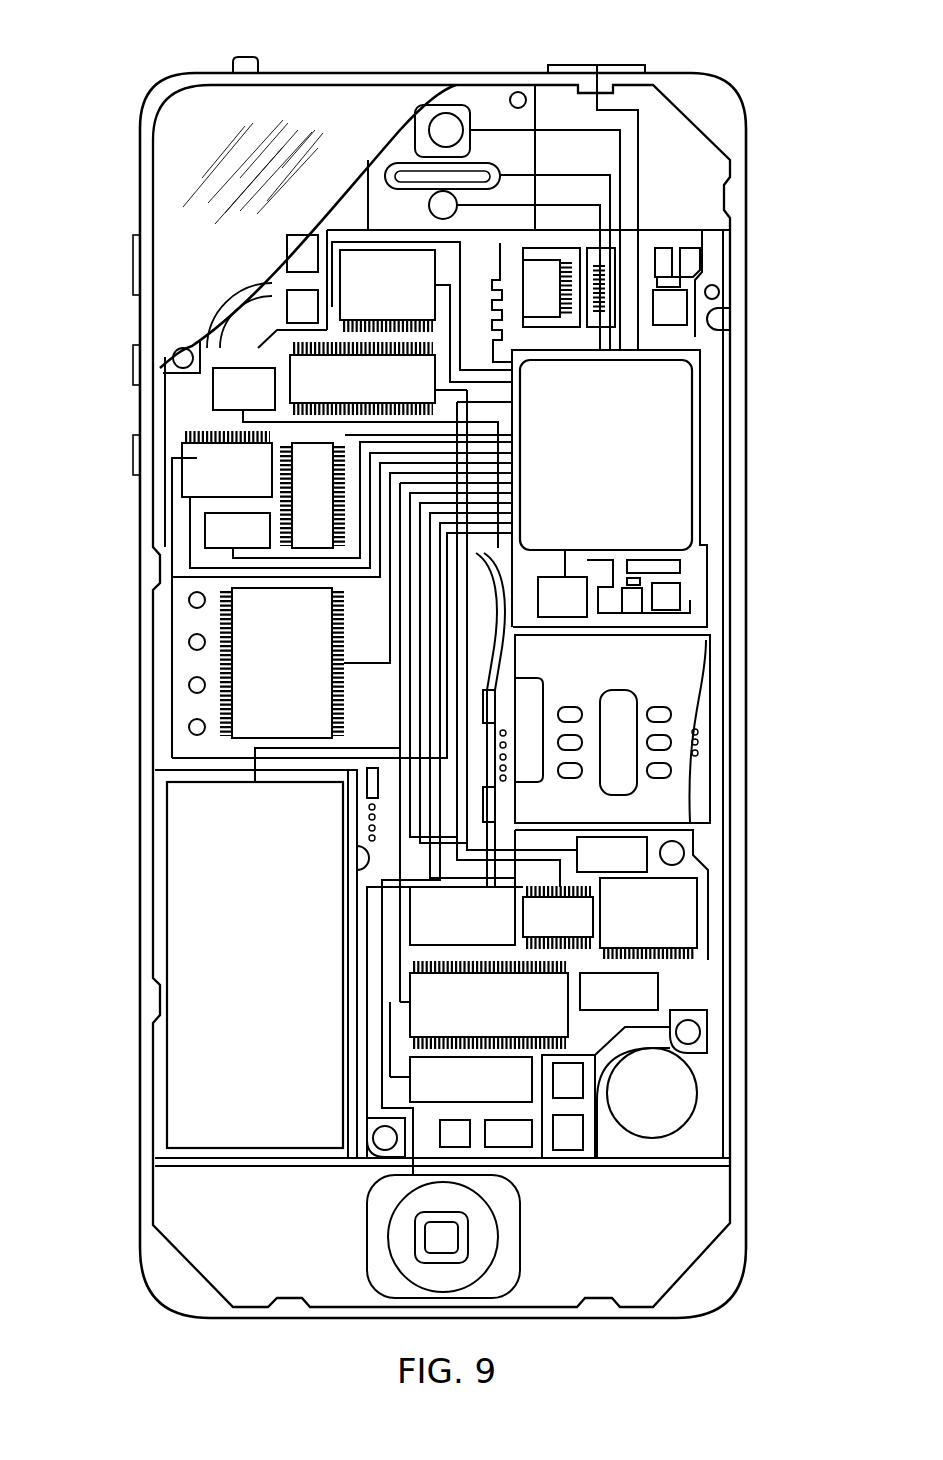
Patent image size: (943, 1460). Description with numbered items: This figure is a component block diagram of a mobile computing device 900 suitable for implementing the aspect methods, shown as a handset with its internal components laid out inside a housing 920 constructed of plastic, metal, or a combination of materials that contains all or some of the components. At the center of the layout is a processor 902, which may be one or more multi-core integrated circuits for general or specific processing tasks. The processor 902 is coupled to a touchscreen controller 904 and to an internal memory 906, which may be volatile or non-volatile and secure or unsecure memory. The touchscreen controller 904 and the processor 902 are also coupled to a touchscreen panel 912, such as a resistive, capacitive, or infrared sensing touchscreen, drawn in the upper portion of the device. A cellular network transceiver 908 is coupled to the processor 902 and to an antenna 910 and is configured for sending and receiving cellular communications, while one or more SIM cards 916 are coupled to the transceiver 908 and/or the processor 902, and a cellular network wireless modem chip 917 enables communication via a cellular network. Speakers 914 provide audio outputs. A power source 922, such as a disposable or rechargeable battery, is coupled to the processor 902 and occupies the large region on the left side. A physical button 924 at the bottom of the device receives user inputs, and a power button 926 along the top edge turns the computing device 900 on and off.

The computing device 900 is at (86, 60).
The processor 902 is at (609, 488).
The touchscreen controller 904 is at (387, 288).
The internal memory 906 is at (350, 605).
The cellular network transceiver 908 is at (631, 263).
The antenna 910 is at (678, 302).
The touchscreen panel 912 is at (188, 176).
The speakers 914 is at (390, 163).
The SIM cards 916 is at (612, 854).
The cellular network wireless modem chip 917 is at (479, 758).
The housing 920 is at (745, 1184).
The power source 922 is at (255, 965).
The physical button 924 is at (452, 1246).
The power button 926 is at (596, 65).